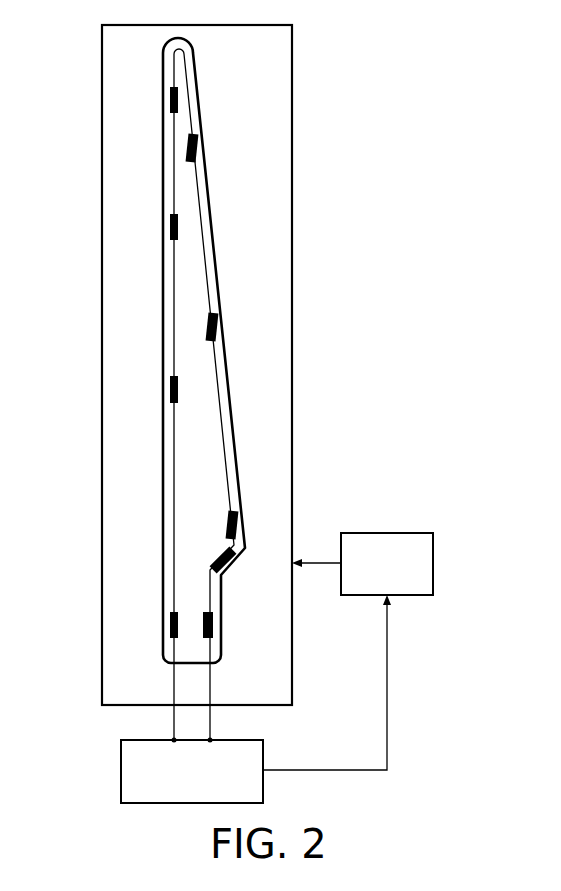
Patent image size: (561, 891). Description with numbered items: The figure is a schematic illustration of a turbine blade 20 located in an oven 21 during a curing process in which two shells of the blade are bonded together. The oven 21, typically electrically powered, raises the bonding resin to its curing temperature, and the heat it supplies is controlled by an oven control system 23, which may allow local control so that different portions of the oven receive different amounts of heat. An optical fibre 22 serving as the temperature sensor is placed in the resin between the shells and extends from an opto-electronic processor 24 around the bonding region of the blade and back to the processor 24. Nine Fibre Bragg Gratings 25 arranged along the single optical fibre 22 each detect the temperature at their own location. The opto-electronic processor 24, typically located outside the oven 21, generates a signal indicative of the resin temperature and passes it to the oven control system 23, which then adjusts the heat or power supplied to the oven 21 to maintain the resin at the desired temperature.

The turbine blade 20 is at (197, 72).
The oven 21 is at (102, 35).
The optical fibre 22 is at (173, 276).
The oven control system 23 is at (435, 545).
The opto-electronic processor 24 is at (121, 752).
The Fibre Bragg Gratings 25 is at (170, 100).